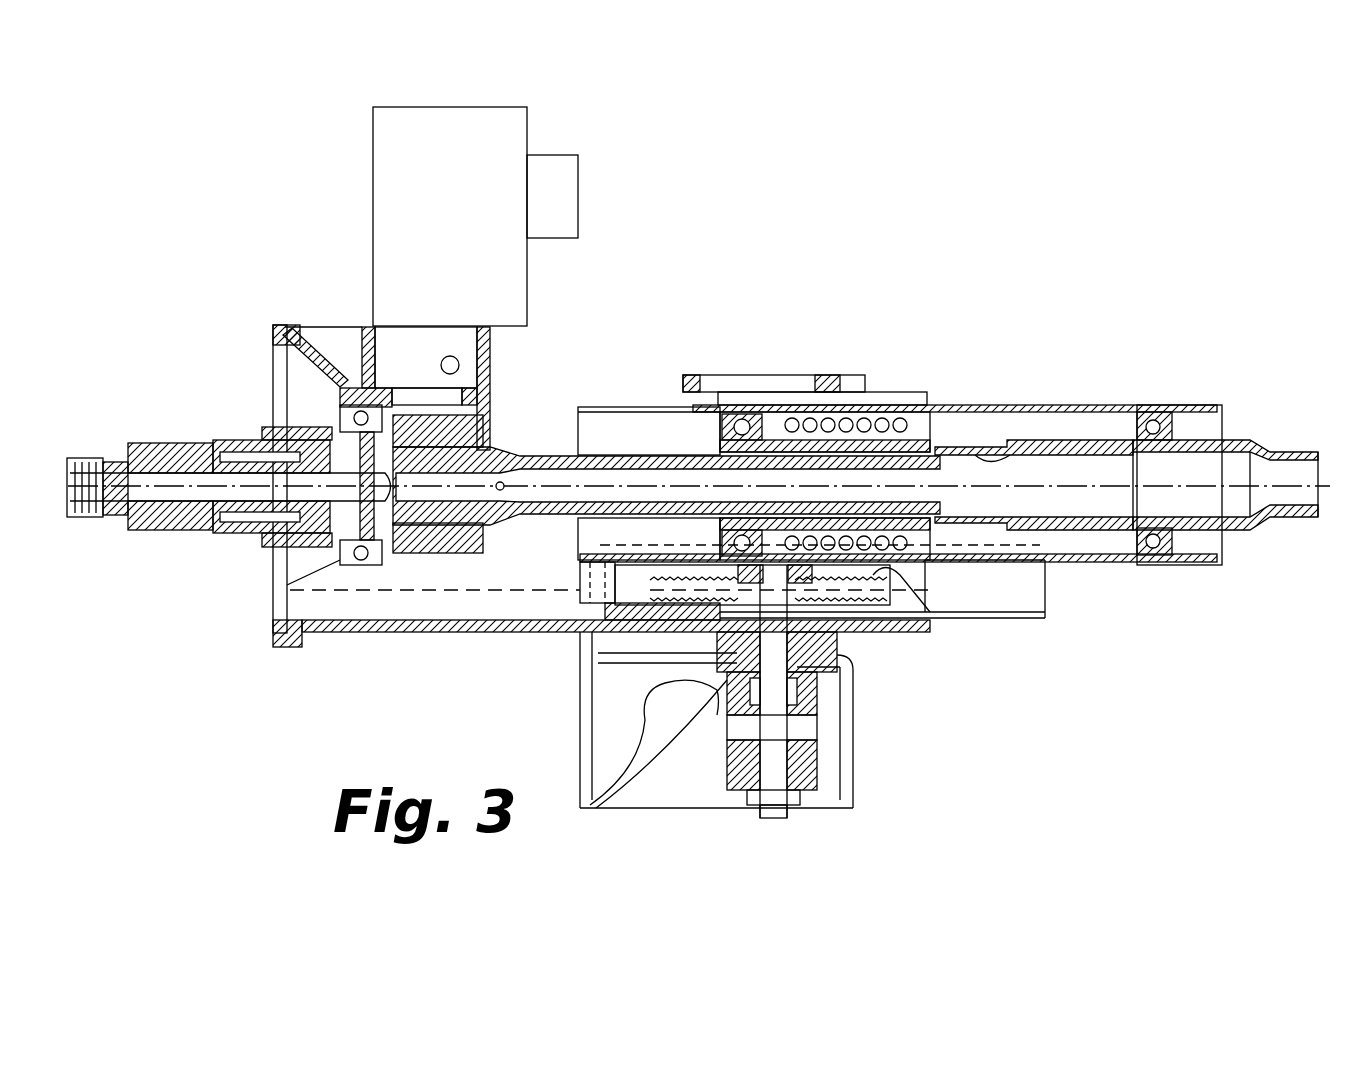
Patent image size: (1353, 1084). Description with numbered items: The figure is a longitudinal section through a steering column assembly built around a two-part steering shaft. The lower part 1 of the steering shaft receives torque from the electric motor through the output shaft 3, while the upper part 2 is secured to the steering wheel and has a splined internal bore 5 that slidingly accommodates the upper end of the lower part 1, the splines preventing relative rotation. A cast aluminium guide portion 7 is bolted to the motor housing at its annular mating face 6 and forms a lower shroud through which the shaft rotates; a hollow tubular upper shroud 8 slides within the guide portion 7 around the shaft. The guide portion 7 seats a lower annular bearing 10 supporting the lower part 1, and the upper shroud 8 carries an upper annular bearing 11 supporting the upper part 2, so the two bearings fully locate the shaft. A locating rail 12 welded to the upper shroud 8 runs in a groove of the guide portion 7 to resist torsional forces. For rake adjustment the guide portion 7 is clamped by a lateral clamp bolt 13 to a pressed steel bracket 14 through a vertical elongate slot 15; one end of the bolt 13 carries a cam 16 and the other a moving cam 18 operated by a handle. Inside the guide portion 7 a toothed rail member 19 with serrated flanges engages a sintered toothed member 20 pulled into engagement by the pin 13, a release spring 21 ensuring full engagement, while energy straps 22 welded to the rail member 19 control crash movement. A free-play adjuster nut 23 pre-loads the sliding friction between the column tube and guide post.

The lower part of the steering shaft 1 is at (535, 456).
The upper part of the steering shaft 2 is at (1100, 532).
The output shaft 3 is at (197, 533).
The splined internal bore 5 is at (1020, 458).
The annular mating face 6 is at (283, 635).
The guide portion 7 is at (573, 632).
The upper shroud 8 is at (972, 405).
The lower annular bearing 10 is at (340, 557).
The upper annular bearing 11 is at (1160, 412).
The locating rail 12 is at (1032, 618).
The clamp bolt 13 is at (780, 735).
The bracket 14 is at (856, 796).
The vertical elongate slot 15 is at (717, 690).
The cam 16 is at (727, 680).
The moving cam 18 is at (750, 738).
The toothed rail member 19 is at (880, 572).
The sintered toothed member 20 is at (868, 632).
The reach release spring 21 is at (835, 634).
The energy straps 22 is at (577, 573).
The free-play adjuster nut 23 is at (808, 702).